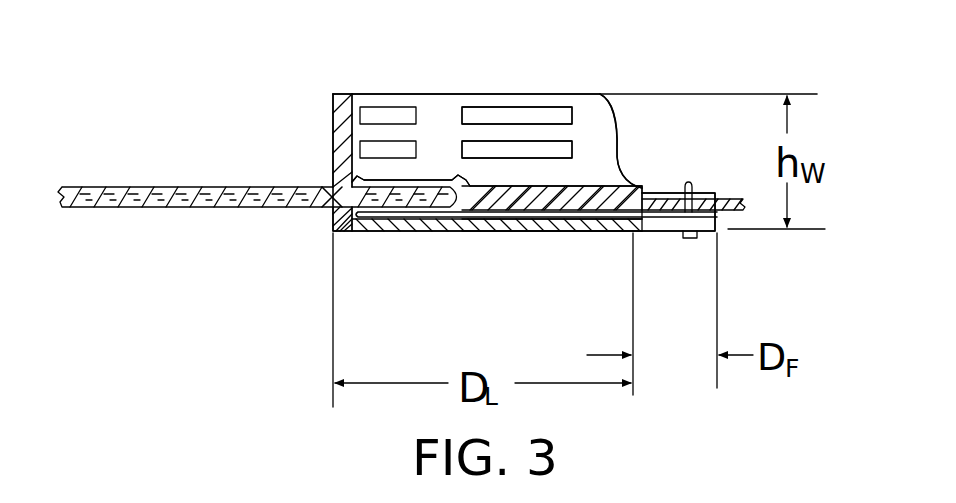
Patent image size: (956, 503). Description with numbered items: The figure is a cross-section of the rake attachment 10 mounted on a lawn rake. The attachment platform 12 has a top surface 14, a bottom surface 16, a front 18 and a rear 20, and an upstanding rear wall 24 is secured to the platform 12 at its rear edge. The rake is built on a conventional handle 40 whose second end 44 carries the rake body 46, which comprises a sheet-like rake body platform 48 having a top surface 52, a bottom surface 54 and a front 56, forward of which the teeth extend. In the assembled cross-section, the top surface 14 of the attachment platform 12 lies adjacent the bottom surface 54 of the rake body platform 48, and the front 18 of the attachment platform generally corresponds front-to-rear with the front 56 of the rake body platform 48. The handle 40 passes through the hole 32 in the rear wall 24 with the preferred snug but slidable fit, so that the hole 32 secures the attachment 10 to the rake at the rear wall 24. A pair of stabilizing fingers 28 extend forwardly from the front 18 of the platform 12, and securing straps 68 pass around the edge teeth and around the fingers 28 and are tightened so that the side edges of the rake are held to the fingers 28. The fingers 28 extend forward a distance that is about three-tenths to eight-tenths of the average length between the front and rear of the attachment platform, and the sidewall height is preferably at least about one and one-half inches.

The rake attachment 10 is at (366, 90).
The attachment platform 12 is at (492, 242).
The top surface 14 is at (552, 212).
The bottom surface 16 is at (528, 233).
The front 18 is at (648, 233).
The rear 20 is at (333, 226).
The rear wall 24 is at (333, 146).
The stabilizing fingers 28 is at (703, 192).
The hole 32 is at (317, 208).
The handle 40 is at (186, 212).
The second end 44 is at (418, 229).
The rake body 46 is at (426, 172).
The rake body platform 48 is at (546, 178).
The top surface 52 is at (584, 183).
The bottom surface 54 is at (455, 230).
The front 56 is at (647, 188).
The securing straps 68 is at (697, 240).